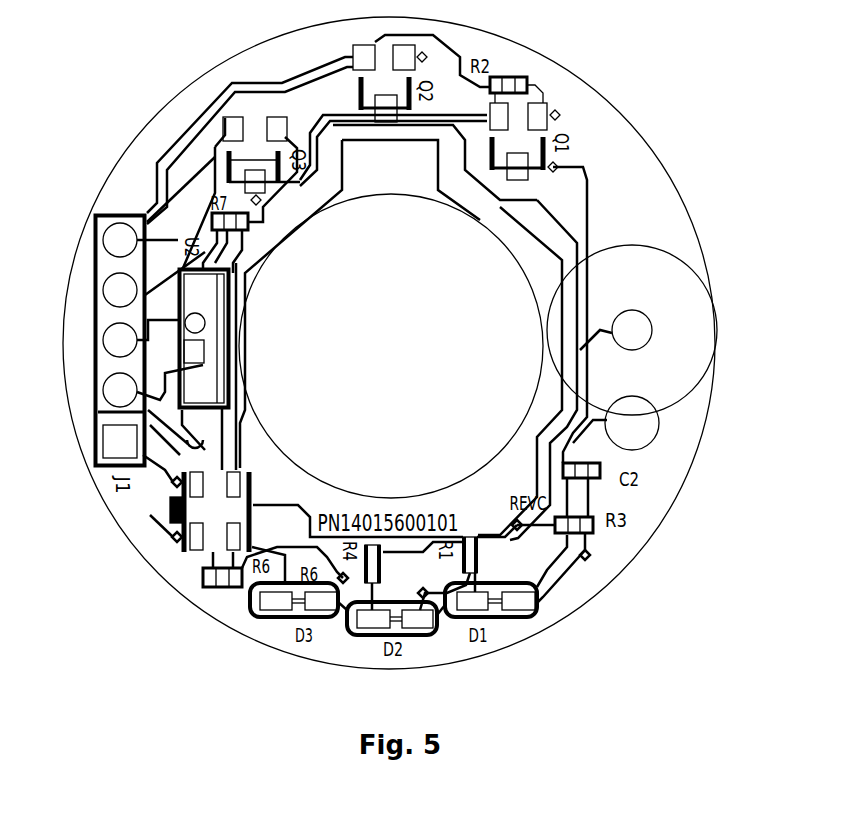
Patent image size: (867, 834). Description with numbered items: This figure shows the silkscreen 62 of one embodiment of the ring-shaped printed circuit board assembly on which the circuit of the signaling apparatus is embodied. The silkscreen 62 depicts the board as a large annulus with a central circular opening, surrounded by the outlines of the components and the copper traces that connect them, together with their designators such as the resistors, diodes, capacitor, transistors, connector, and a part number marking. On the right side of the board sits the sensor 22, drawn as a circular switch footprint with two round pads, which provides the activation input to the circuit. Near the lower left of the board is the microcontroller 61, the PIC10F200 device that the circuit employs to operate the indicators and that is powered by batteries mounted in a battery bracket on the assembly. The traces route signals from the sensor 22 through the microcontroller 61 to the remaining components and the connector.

The sensor 22 is at (677, 302).
The microcontroller 61 is at (197, 547).
The silkscreen 62 is at (95, 583).